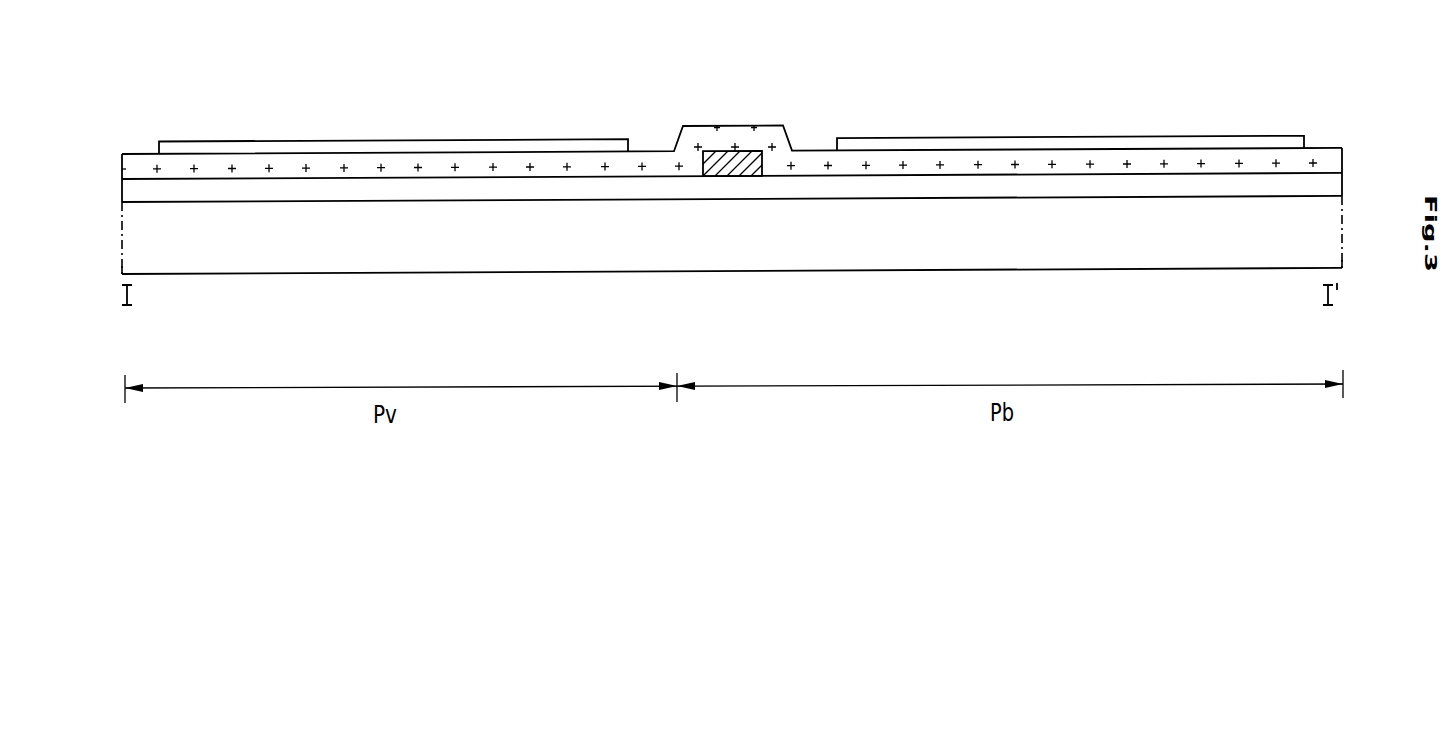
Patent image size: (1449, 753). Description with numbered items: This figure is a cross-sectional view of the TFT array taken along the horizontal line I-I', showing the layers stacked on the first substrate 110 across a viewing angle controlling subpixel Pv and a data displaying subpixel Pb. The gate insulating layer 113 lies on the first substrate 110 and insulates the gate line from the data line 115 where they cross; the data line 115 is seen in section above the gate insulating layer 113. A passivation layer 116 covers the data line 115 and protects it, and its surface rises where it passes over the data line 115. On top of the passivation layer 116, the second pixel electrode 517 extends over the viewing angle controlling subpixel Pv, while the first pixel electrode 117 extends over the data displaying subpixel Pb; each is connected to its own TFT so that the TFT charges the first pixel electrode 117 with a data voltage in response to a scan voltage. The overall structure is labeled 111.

The display substrate 111 is at (762, 197).
The first substrate 110 is at (1333, 234).
The gate insulating layer 113 is at (1333, 188).
The passivation layer 116 is at (1333, 163).
The second pixel electrode 517 is at (340, 143).
The first pixel electrode 117 is at (1052, 140).
The data line 115 is at (745, 165).